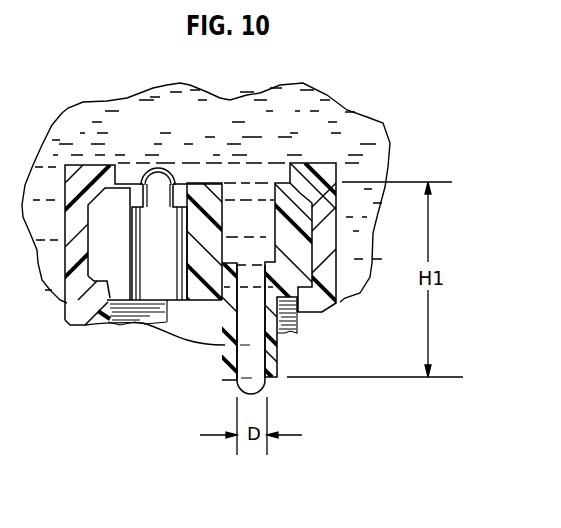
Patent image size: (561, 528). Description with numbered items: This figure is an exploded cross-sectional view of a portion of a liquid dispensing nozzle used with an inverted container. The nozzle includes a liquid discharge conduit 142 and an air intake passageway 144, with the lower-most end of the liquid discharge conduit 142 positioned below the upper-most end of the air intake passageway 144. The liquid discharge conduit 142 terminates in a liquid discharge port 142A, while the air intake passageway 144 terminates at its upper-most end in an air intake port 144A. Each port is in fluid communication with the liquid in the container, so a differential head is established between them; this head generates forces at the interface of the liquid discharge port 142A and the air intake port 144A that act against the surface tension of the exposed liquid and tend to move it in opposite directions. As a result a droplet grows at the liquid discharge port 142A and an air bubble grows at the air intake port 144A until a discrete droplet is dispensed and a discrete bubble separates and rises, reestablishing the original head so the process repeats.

The liquid discharge conduit 142 is at (270, 356).
The liquid discharge port 142A is at (246, 391).
The air intake passageway 144 is at (157, 285).
The air intake port 144A is at (141, 170).